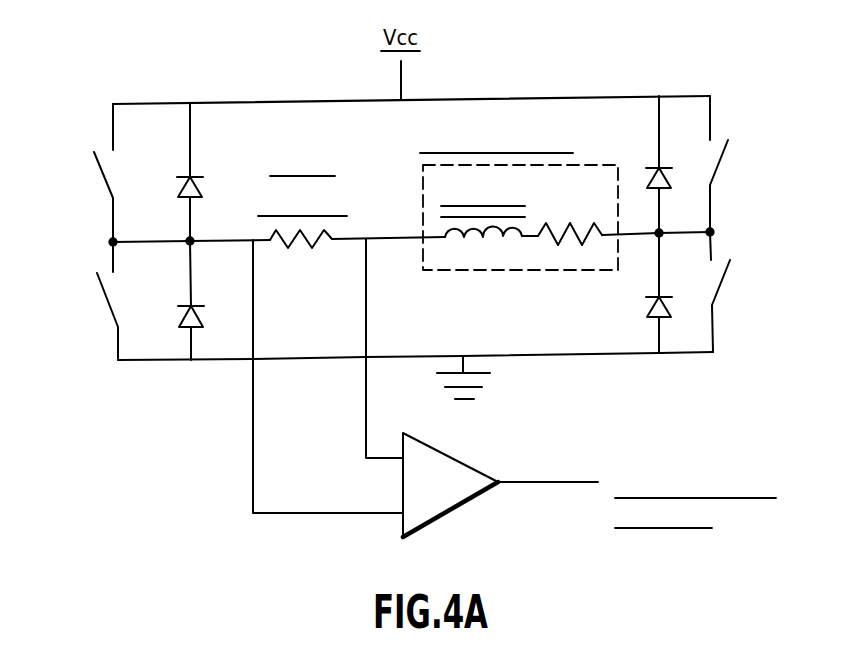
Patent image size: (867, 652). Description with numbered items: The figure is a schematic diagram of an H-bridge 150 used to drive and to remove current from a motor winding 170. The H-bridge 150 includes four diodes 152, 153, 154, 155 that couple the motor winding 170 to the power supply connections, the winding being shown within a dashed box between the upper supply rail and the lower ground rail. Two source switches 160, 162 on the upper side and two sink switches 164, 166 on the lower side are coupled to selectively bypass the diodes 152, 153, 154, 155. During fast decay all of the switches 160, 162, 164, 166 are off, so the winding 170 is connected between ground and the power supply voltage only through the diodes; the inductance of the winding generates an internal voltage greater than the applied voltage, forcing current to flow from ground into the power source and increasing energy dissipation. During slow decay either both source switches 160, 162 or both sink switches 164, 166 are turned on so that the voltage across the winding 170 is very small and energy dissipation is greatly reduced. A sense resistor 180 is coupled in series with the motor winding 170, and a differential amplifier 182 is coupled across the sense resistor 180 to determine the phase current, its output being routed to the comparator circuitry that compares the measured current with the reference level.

The H-bridge 150 is at (686, 68).
The diode 152 is at (200, 186).
The diode 153 is at (180, 312).
The diode 154 is at (648, 178).
The diode 155 is at (648, 306).
The source switch 160 is at (98, 178).
The source switch 162 is at (718, 138).
The sink switch 164 is at (100, 293).
The sink switch 166 is at (728, 283).
The motor winding 170 is at (475, 271).
The sense resistor 180 is at (300, 250).
The differential amplifier 182 is at (470, 505).